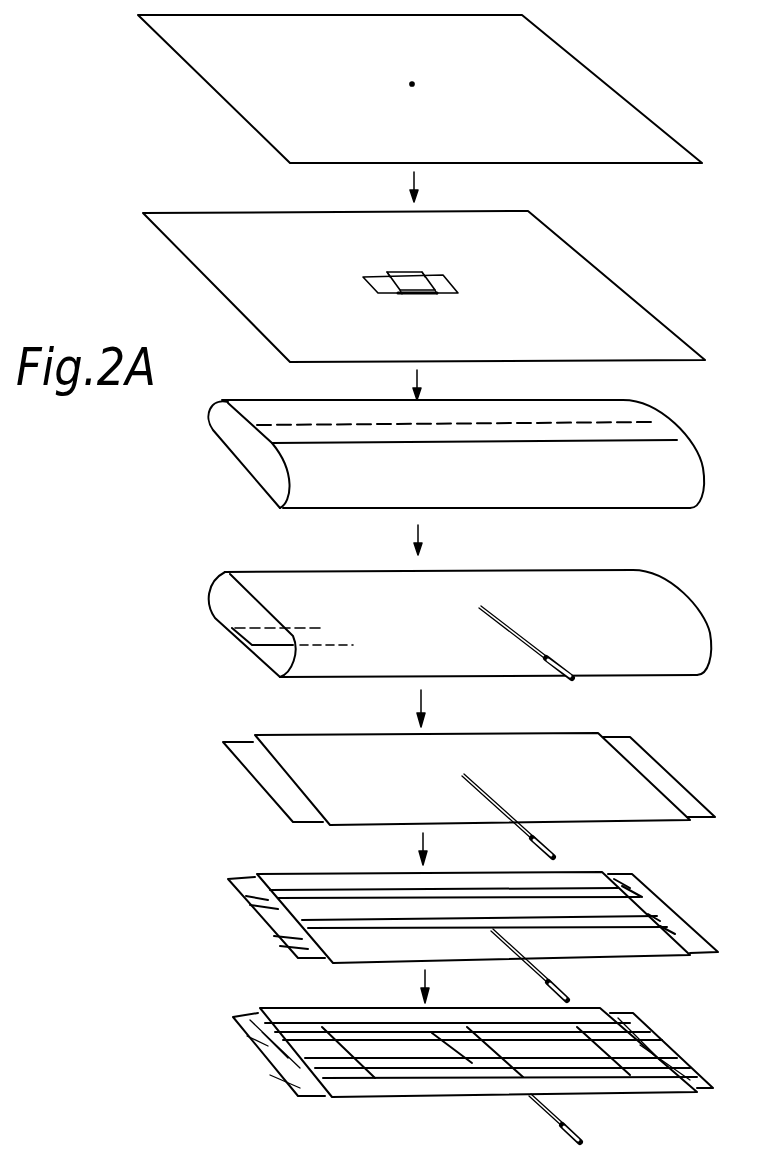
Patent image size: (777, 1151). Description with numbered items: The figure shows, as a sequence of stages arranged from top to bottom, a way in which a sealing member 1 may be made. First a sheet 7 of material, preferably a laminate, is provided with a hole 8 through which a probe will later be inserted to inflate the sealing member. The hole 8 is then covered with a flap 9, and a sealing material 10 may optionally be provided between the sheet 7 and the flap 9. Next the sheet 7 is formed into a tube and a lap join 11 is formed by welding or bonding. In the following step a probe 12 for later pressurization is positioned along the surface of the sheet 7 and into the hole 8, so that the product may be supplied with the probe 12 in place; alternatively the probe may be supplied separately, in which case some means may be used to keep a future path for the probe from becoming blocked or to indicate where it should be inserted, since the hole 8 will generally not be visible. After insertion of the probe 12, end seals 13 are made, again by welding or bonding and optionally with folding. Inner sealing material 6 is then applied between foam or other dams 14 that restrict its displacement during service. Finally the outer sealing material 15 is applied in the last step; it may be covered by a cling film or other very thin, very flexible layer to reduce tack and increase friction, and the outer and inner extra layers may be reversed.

The sealing member 1 is at (228, 1052).
The inner sealing material 6 is at (270, 910).
The sheet 7 is at (592, 88).
The hole 8 is at (409, 84).
The flap 9 is at (450, 283).
The sealing material 10 is at (420, 295).
The lap join 11 is at (652, 428).
The probe 12 is at (520, 635).
The end seals 13 is at (270, 785).
The dams 14 is at (473, 917).
The outer sealing material 15 is at (625, 1047).